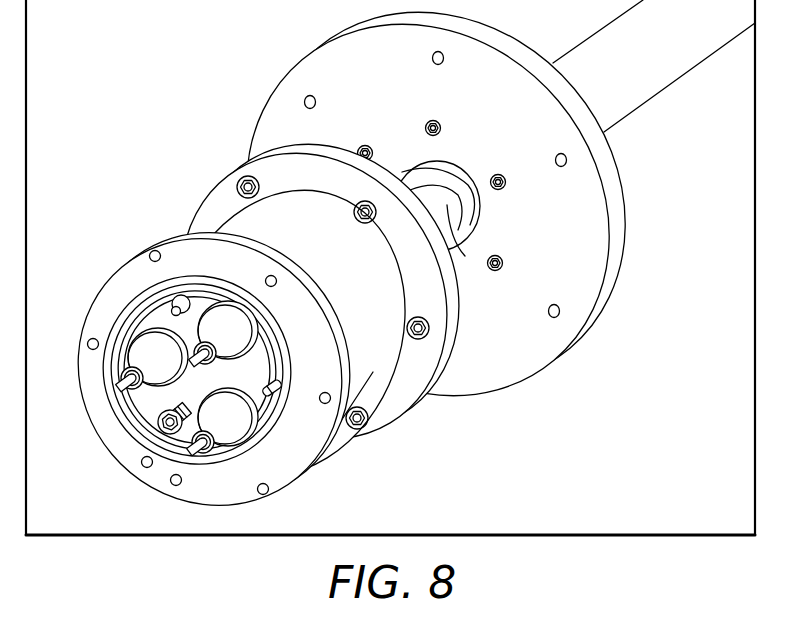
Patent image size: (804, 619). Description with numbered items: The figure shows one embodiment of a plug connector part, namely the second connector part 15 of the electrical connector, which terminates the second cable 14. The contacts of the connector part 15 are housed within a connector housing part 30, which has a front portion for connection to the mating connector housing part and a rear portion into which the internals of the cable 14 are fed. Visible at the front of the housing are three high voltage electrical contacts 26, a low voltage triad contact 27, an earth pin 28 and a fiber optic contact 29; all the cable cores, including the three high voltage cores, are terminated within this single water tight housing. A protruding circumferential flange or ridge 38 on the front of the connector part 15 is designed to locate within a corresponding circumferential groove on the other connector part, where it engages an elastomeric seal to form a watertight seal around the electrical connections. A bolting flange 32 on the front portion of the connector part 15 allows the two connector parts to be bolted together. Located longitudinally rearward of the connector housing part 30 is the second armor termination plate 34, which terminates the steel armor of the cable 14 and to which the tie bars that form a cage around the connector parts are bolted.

The second cable 14 is at (673, 68).
The second connector part 15 is at (376, 371).
The high voltage electrical contacts 26 is at (137, 351).
The low voltage triad contact 27 is at (150, 424).
The earth pin 28 is at (277, 390).
The fiber optic contact 29 is at (173, 306).
The connector housing part 30 is at (240, 228).
The bolting flange 32 is at (142, 256).
The second armor termination plate 34 is at (546, 356).
The protruding circumferential flange 38 is at (173, 460).